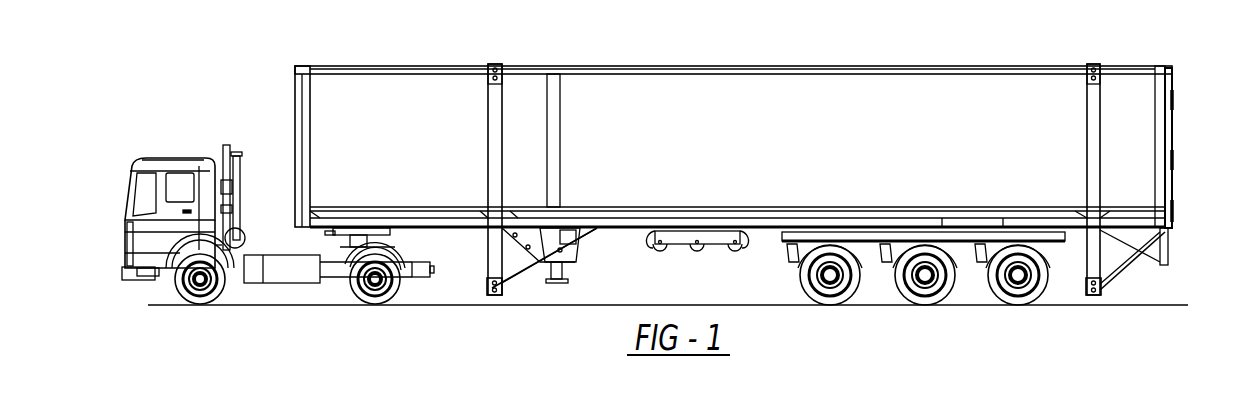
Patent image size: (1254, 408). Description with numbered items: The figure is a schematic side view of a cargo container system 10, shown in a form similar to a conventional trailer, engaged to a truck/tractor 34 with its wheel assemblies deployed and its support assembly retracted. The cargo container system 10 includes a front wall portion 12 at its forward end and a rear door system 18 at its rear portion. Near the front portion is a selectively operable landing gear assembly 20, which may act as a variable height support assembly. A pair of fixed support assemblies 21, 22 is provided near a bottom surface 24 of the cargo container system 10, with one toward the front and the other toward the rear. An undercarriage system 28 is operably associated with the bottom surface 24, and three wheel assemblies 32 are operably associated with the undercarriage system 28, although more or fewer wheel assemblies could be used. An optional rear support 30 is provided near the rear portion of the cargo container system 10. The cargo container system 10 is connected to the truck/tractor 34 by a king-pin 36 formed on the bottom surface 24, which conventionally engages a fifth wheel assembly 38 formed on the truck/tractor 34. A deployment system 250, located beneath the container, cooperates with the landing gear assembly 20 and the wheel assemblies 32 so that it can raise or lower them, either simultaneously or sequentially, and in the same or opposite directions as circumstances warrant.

The cargo container system 10 is at (726, 202).
The front wall portion 12 is at (271, 102).
The rear door system 18 is at (1176, 130).
The landing gear assembly 20 is at (548, 292).
The fixed support assembly 21 is at (479, 276).
The fixed support assembly 22 is at (1106, 299).
The bottom surface 24 is at (478, 246).
The undercarriage system 28 is at (772, 246).
The rear support 30 is at (1176, 243).
The wheel assemblies 32 is at (833, 311).
The truck/tractor 34 is at (276, 234).
The king-pin 36 is at (317, 243).
The fifth wheel assembly 38 is at (380, 210).
The deployment system 250 is at (642, 256).